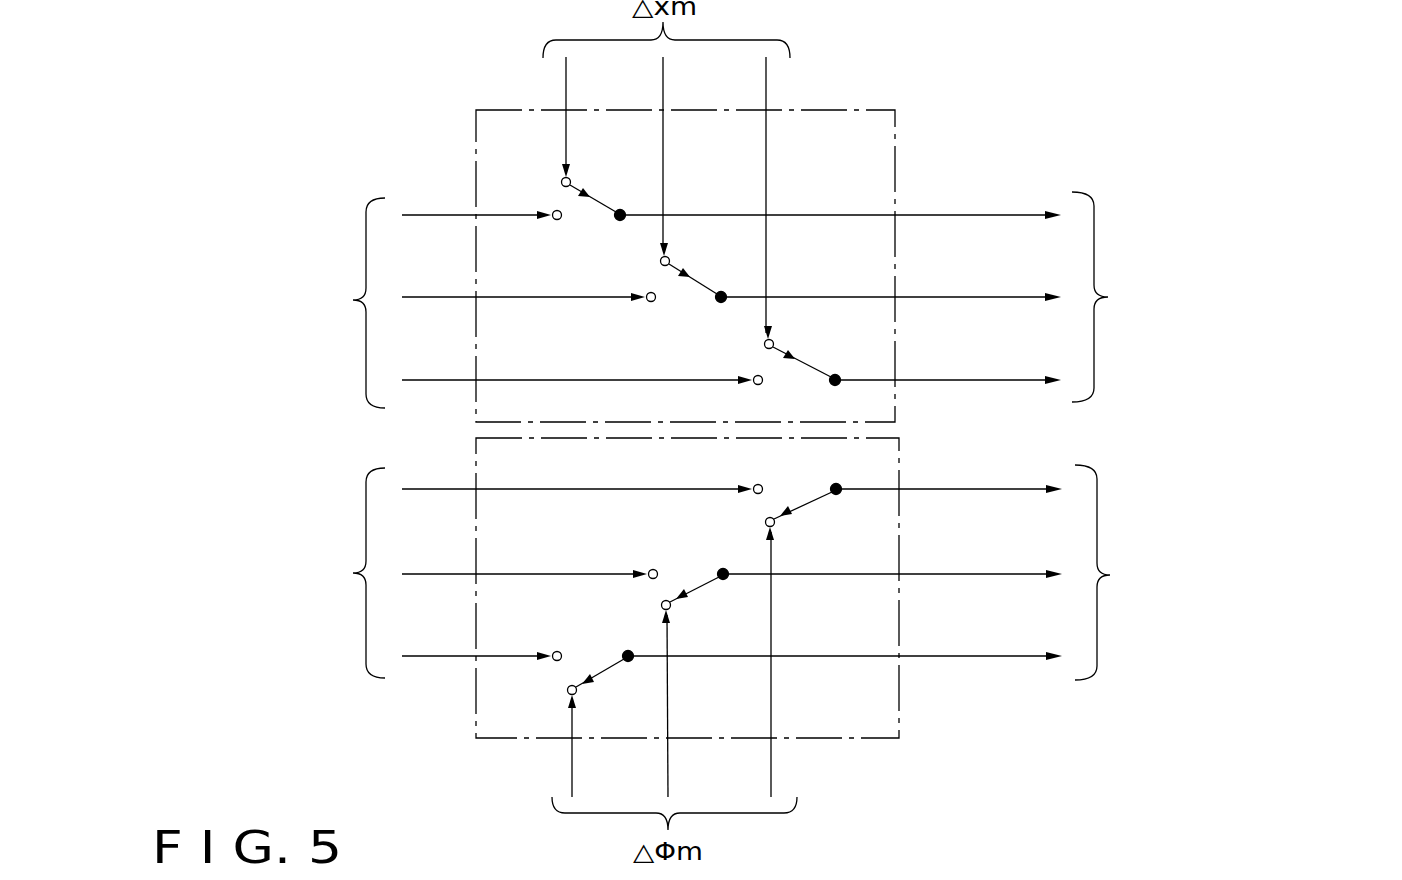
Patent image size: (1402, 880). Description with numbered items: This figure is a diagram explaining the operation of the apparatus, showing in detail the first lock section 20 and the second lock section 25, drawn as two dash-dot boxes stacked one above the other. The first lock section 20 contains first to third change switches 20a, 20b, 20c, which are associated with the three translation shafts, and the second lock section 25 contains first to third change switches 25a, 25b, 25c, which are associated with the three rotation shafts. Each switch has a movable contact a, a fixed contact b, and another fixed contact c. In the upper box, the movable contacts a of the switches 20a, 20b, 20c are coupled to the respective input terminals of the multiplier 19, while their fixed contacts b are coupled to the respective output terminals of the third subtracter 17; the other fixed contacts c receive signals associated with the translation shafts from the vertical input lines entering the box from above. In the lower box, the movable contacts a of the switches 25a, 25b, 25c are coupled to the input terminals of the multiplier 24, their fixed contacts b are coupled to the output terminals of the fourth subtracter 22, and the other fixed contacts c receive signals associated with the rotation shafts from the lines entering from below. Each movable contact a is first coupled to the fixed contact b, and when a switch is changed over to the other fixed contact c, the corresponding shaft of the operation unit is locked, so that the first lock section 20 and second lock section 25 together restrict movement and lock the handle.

The third subtracter 17 is at (239, 303).
The multiplier 19 is at (1205, 297).
The first lock section 20 is at (850, 112).
The first change switch 20a is at (603, 192).
The second change switch 20b is at (702, 275).
The third change switch 20c is at (816, 357).
The fourth subtracter 22 is at (239, 573).
The multiplier 24 is at (1200, 572).
The second lock section 25 is at (899, 712).
The first change switch 25a is at (807, 513).
The second change switch 25b is at (700, 599).
The third change switch 25c is at (615, 673).